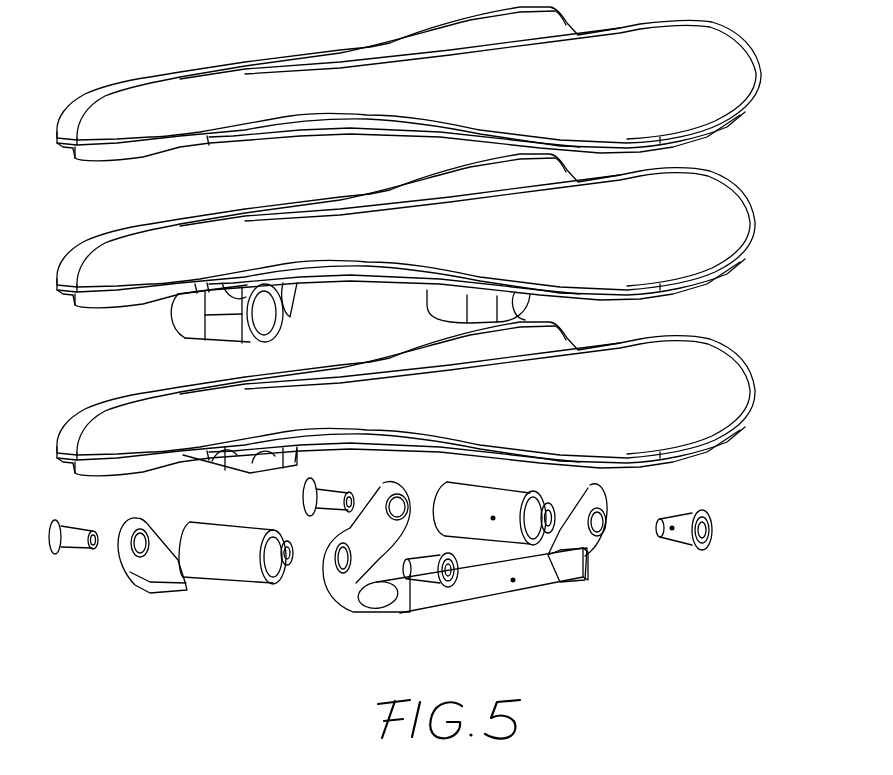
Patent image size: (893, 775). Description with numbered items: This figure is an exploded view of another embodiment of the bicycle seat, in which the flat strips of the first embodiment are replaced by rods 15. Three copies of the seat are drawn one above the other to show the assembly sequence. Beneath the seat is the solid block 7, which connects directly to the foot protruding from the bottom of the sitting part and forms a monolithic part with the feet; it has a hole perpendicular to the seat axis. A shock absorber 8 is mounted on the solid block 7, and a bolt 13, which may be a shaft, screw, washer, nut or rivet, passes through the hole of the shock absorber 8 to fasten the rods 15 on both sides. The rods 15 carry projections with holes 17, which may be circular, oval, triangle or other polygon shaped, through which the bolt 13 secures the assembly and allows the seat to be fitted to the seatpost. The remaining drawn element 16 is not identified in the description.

The solid block 7 is at (192, 323).
The shock absorber 8 is at (493, 518).
The bolt 13 is at (710, 547).
The rod 15 is at (513, 580).
The support bracket 16 is at (347, 585).
The hole 17 is at (340, 565).